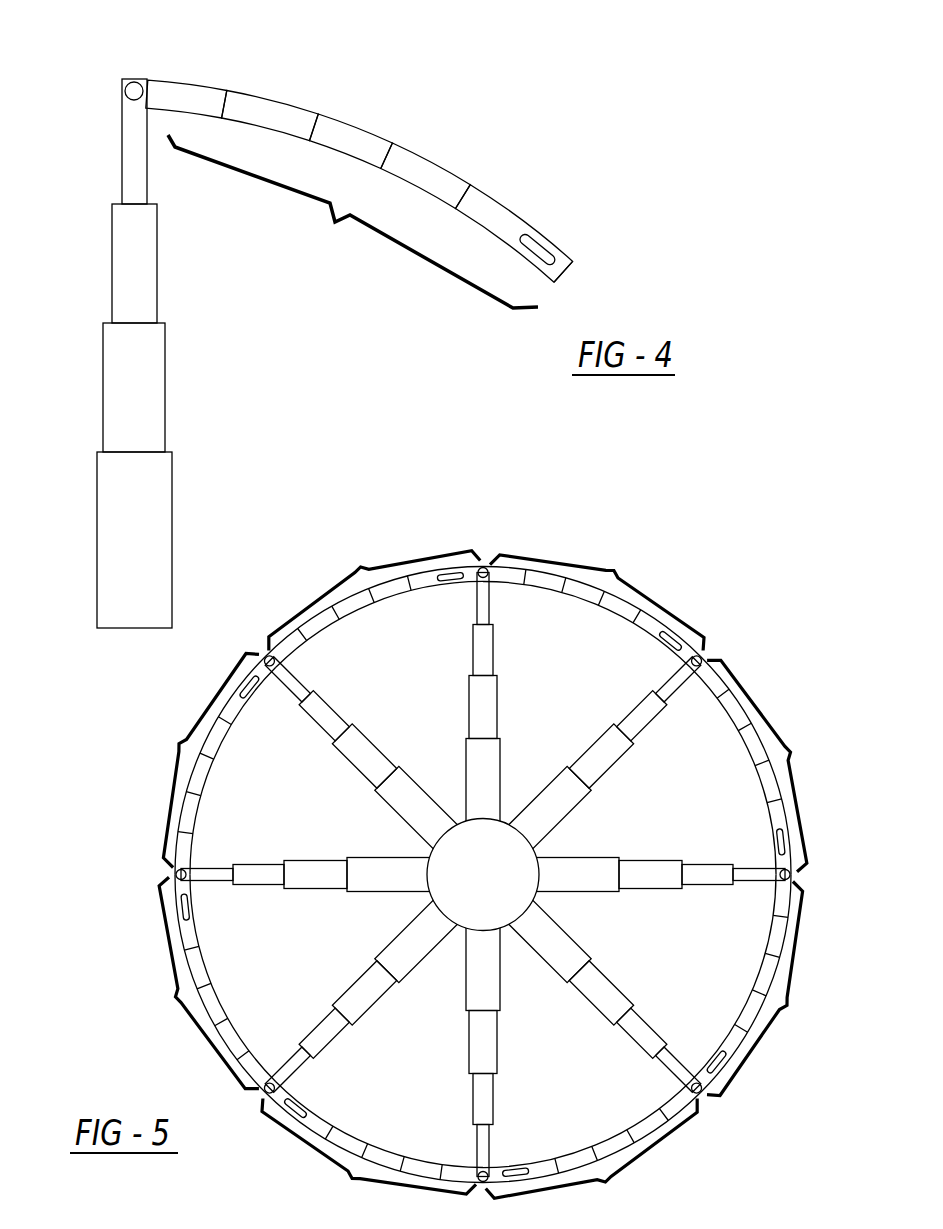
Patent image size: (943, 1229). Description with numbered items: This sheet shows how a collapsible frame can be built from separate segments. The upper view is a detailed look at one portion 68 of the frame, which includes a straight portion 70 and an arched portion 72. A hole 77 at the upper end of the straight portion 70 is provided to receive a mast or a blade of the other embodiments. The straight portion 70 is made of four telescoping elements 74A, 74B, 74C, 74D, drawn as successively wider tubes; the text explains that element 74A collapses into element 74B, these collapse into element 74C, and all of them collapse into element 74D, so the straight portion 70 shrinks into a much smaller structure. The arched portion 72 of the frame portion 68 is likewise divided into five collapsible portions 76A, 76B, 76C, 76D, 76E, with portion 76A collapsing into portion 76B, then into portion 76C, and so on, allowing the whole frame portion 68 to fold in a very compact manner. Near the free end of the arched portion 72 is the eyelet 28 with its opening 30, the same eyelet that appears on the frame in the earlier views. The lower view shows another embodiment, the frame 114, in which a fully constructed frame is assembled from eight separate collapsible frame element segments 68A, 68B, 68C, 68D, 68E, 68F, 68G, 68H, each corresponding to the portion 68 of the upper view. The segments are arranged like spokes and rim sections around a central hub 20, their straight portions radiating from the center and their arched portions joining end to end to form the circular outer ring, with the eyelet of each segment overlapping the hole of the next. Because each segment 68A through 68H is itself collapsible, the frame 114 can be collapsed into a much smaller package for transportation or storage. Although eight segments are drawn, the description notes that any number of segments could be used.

In FIG. 5, the hub 20 is at (498, 858).
In FIG. 4, the eyelet 28 is at (538, 243).
In FIG. 4, the opening 30 is at (567, 252).
In FIG. 4, the portion of the frame 68 is at (423, 165).
In FIG. 5, the collapsible frame element segment 68A is at (593, 603).
In FIG. 5, the collapsible frame element segment 68B is at (748, 767).
In FIG. 5, the collapsible frame element segment 68C is at (763, 985).
In FIG. 5, the collapsible frame element segment 68D is at (591, 1125).
In FIG. 5, the collapsible frame element segment 68E is at (372, 1143).
In FIG. 5, the collapsible frame element segment 68F is at (219, 983).
In FIG. 5, the collapsible frame element segment 68G is at (207, 764).
In FIG. 5, the collapsible frame element segment 68H is at (375, 610).
In FIG. 4, the straight portion 70 is at (158, 317).
In FIG. 4, the arched portion 72 is at (353, 221).
In FIG. 4, the telescoping element 74A is at (135, 168).
In FIG. 4, the telescoping element 74B is at (143, 262).
In FIG. 4, the telescoping element 74C is at (143, 400).
In FIG. 4, the telescoping element 74D is at (138, 518).
In FIG. 4, the collapsible portion 76A is at (192, 97).
In FIG. 4, the collapsible portion 76B is at (267, 108).
In FIG. 4, the collapsible portion 76C is at (347, 137).
In FIG. 4, the collapsible portion 76D is at (427, 158).
In FIG. 4, the collapsible portion 76E is at (498, 212).
In FIG. 4, the hole 77 is at (134, 88).
In FIG. 5, the frame 114 is at (449, 860).